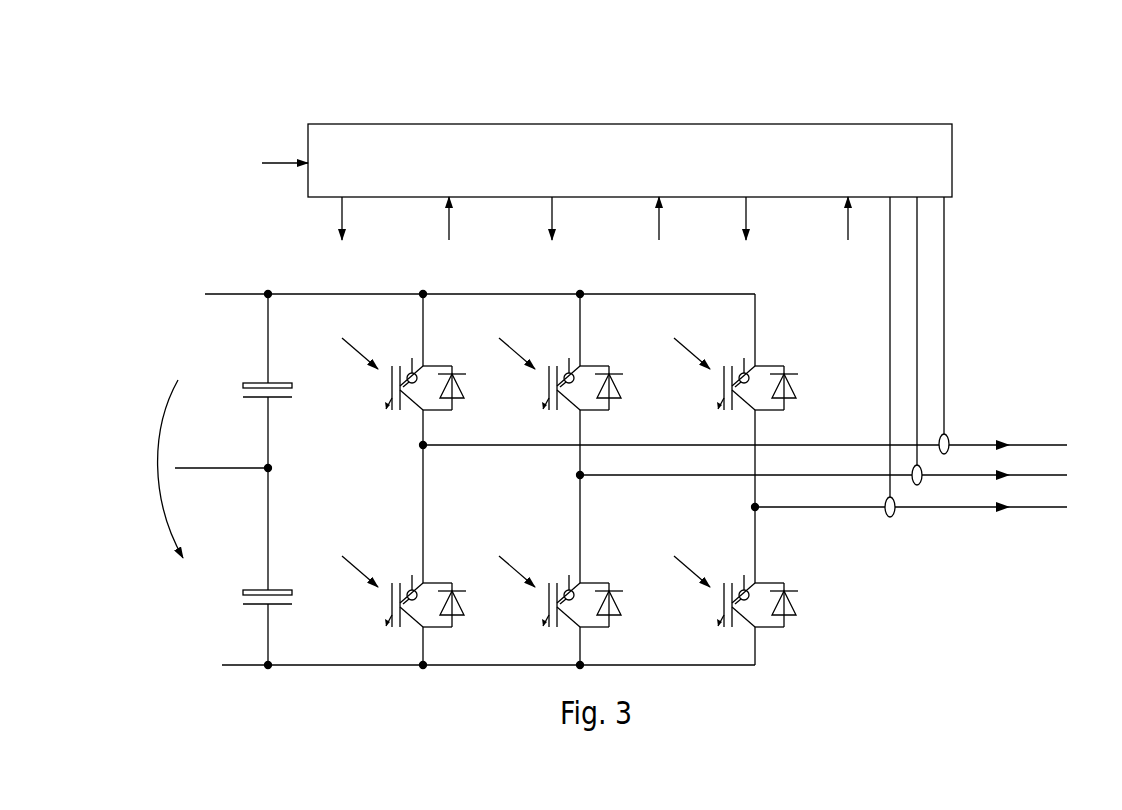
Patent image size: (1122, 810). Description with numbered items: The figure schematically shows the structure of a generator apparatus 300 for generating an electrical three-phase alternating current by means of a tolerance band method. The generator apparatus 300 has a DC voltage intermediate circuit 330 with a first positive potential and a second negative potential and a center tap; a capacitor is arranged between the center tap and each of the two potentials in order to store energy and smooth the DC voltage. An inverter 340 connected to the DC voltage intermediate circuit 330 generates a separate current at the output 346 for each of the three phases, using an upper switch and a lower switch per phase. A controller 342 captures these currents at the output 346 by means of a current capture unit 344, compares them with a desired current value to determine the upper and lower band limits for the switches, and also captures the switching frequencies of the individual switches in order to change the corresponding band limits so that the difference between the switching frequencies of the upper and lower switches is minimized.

The generator apparatus 300 is at (1042, 173).
The DC voltage intermediate circuit 330 is at (222, 262).
The inverter 340 is at (787, 660).
The controller 342 is at (893, 122).
The current capture unit 344 is at (990, 320).
The output of the inverter 346 is at (865, 561).